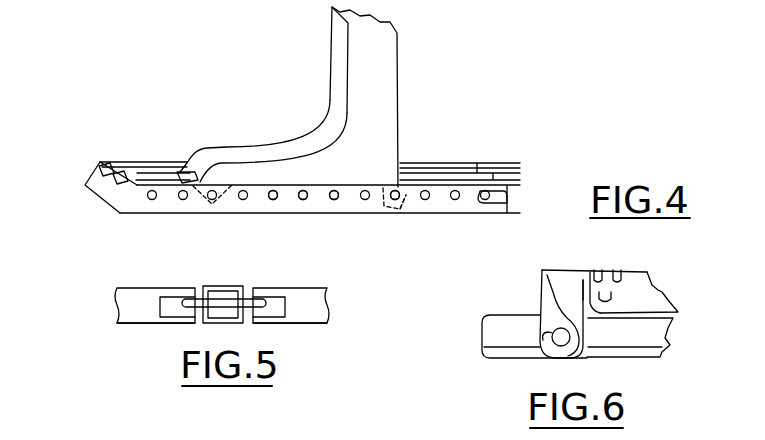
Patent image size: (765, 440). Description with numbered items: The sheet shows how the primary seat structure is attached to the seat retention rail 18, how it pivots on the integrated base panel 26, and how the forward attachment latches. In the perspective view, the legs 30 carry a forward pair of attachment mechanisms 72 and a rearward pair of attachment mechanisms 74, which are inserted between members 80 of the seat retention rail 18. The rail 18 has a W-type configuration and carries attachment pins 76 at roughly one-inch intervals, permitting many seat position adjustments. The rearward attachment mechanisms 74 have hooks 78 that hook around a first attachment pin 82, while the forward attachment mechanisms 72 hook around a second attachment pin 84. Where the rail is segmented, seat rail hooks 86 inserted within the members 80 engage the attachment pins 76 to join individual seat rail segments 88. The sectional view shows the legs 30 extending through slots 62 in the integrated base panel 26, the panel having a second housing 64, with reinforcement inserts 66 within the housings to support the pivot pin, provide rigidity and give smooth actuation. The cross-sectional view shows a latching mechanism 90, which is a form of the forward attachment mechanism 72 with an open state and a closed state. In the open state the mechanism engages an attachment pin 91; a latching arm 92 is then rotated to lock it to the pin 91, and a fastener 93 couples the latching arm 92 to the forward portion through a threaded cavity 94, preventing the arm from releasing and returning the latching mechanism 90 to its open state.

In FIG. 4, the seat retention rail 18 is at (141, 162).
In FIG. 5, the integrated base panel 26 is at (162, 273).
In FIG. 4, the legs 30 is at (400, 88).
In FIG. 5, the legs 30 is at (210, 287).
In FIG. 5, the slots 62 is at (240, 287).
In FIG. 5, the second housing 64 is at (143, 323).
In FIG. 5, the reinforcement inserts 66 is at (182, 288).
In FIG. 4, the forward pair of attachment mechanisms 72 is at (202, 182).
In FIG. 6, the forward pair of attachment mechanisms 72 is at (540, 292).
In FIG. 4, the rearward pair of attachment mechanisms 74 is at (373, 218).
In FIG. 4, the attachment pins 76 is at (274, 200).
In FIG. 4, the hooks 78 is at (418, 222).
In FIG. 4, the members 80 is at (103, 180).
In FIG. 4, the first attachment pin 82 is at (397, 192).
In FIG. 4, the second attachment pin 84 is at (213, 197).
In FIG. 4, the seat rail hooks 86 is at (477, 198).
In FIG. 4, the seat rail segments 88 is at (490, 165).
In FIG. 6, the latching mechanism 90 is at (542, 272).
In FIG. 6, the attachment pin 91 is at (538, 333).
In FIG. 6, the latching arm 92 is at (570, 272).
In FIG. 6, the fastener 93 is at (608, 270).
In FIG. 6, the threaded cavity 94 is at (610, 312).